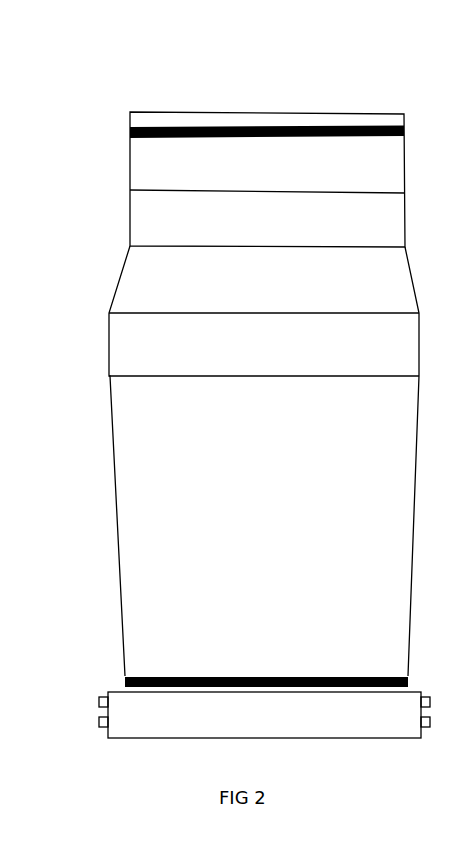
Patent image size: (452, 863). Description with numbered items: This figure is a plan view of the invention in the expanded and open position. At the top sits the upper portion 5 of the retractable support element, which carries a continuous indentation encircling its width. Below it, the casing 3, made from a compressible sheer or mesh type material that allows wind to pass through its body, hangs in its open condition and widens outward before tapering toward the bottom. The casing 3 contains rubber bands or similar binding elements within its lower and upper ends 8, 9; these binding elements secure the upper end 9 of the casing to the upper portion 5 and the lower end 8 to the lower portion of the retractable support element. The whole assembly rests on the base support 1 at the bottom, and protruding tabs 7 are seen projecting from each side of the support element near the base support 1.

The base support 1 is at (151, 725).
The casing 3 is at (100, 465).
The upper portion 5 is at (290, 96).
The protruding tabs 7 is at (88, 726).
The lower end of the casing 8 is at (112, 678).
The upper end of the casing 9 is at (117, 125).